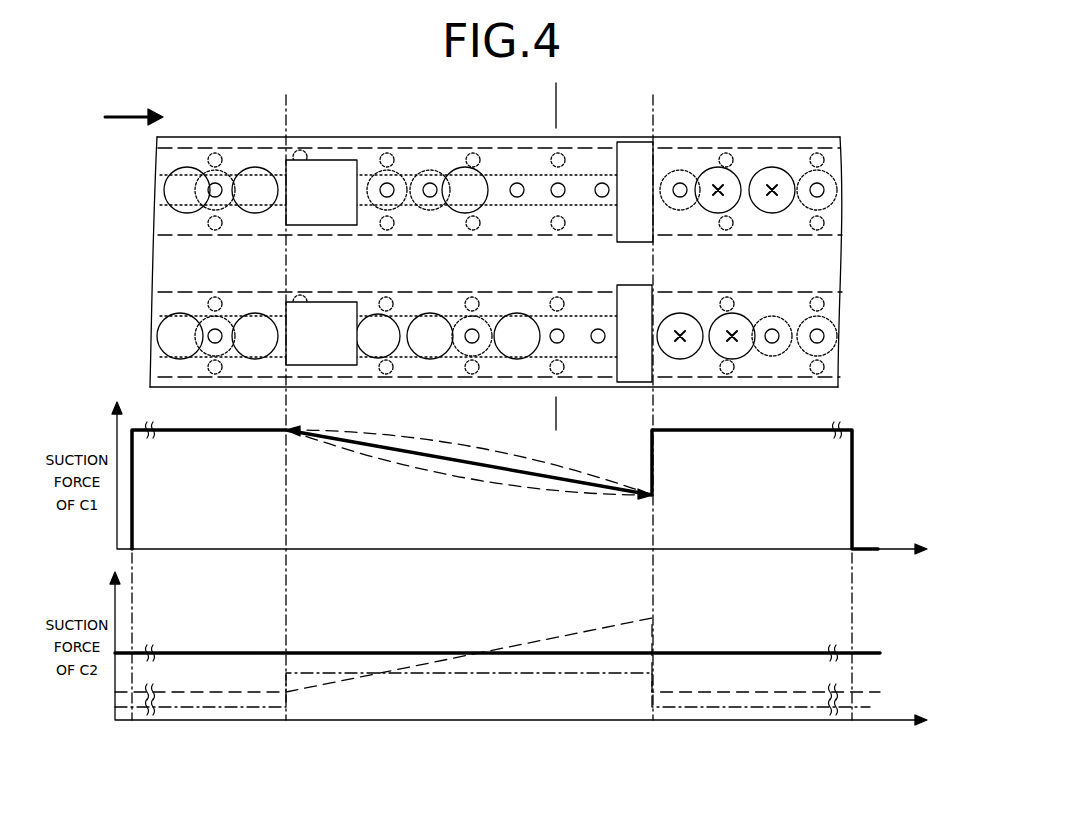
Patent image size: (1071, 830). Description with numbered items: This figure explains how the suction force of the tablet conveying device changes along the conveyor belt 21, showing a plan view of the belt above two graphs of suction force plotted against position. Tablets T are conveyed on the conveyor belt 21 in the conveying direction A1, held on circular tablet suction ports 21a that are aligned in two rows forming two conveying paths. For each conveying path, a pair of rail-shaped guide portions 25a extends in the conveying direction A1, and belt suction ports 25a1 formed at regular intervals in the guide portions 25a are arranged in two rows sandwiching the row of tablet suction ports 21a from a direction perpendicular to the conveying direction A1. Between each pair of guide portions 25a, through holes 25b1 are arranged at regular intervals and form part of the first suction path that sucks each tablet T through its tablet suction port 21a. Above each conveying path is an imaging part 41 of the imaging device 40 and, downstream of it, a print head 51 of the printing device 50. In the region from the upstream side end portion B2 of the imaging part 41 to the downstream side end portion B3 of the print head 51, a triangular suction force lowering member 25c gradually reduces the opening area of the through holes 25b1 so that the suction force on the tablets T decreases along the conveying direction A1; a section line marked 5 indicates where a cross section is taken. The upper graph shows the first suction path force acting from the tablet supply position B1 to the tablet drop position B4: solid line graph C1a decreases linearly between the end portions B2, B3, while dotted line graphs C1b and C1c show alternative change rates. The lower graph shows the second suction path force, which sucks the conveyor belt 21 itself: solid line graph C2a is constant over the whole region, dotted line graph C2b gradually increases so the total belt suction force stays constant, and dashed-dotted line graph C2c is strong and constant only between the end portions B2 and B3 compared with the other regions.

The conveyor belt 21 is at (253, 137).
The tablet suction port 21a is at (555, 184).
The guide portion 25a is at (836, 160).
The belt suction port 25a1 is at (820, 150).
The through hole 25b1 is at (838, 190).
The suction force lowering member 25c is at (578, 176).
The imaging device 40 is at (350, 249).
The imaging part 41 is at (342, 160).
The printing device 50 is at (663, 250).
The print head 51 is at (629, 142).
The section line 5 is at (547, 97).
The conveying direction A1 is at (147, 113).
The tablet T is at (166, 189).
The solid line graph C1a is at (455, 462).
The dotted line graph C1b is at (586, 473).
The dotted line graph C1c is at (588, 495).
The solid line graph C2a is at (325, 652).
The dotted line graph C2b is at (553, 636).
The dashed-dotted line graph C2c is at (552, 676).
The tablet supply position B1 is at (133, 672).
The upstream side end portion of the imaging part B2 is at (287, 443).
The downstream side end portion of the print head B3 is at (652, 443).
The tablet drop position B4 is at (852, 672).